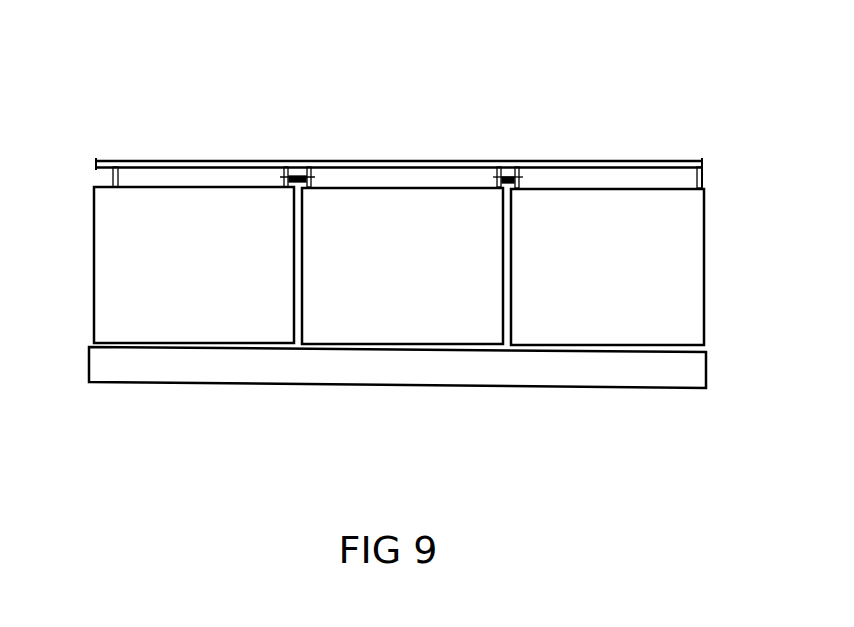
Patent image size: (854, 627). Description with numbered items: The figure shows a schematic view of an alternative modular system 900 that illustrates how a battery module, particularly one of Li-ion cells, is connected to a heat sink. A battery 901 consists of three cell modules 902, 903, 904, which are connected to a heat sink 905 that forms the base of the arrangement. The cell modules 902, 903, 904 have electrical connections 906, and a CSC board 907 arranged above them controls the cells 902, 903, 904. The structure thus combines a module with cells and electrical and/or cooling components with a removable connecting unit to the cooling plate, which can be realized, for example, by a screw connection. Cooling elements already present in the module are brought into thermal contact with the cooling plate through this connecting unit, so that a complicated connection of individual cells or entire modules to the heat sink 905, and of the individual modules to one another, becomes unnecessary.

The modular system 900 is at (130, 112).
The battery 901 is at (270, 305).
The cell module 902 is at (194, 265).
The cell module 903 is at (402, 266).
The cell module 904 is at (607, 267).
The heat sink 905 is at (293, 362).
The electrical connections 906 is at (507, 177).
The CSC board 907 is at (405, 167).